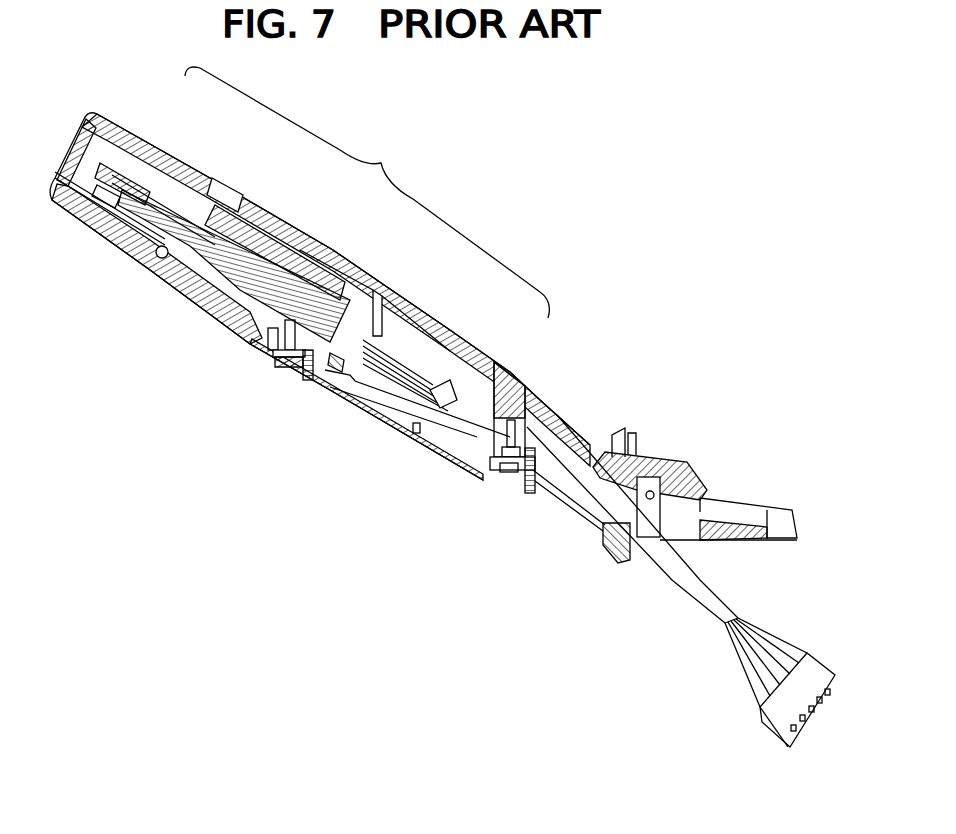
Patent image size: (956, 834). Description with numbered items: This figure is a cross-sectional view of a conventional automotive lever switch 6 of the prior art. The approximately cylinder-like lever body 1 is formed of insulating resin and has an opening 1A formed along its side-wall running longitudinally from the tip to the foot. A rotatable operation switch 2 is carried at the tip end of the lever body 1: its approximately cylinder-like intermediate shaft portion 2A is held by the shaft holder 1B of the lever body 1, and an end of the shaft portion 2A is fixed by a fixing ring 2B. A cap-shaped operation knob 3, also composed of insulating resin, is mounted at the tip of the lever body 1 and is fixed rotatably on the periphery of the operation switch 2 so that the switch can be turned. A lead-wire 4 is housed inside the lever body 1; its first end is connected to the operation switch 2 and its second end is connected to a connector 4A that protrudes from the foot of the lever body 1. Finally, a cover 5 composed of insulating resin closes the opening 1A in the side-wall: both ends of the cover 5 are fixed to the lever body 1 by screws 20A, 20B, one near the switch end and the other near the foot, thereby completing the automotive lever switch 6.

The lever body 1 is at (460, 345).
The opening 1A is at (440, 445).
The shaft holder 1B is at (330, 268).
The operation switch 2 is at (212, 180).
The intermediate shaft portion 2A is at (287, 283).
The fixing ring 2B is at (330, 370).
The operation knob 3 is at (155, 147).
The lead-wire 4 is at (740, 673).
The connector 4A is at (762, 722).
The cover 5 is at (397, 430).
The automotive lever switch 6 is at (382, 158).
The screw 20A is at (275, 353).
The screw 20B is at (510, 472).